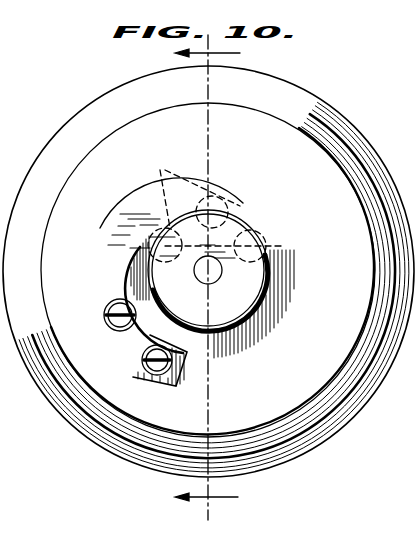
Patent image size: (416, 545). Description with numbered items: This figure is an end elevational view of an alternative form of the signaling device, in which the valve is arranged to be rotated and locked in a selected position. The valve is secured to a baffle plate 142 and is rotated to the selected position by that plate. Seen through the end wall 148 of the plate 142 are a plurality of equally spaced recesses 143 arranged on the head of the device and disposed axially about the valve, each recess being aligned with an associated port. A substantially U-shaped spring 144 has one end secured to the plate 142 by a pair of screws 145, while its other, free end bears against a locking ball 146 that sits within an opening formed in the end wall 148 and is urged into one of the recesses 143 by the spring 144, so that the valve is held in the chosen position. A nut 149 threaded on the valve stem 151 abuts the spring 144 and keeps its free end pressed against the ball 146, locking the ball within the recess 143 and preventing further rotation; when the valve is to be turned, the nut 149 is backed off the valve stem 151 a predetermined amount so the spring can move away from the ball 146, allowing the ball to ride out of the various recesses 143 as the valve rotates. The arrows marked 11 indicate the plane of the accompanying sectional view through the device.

The section line 11- 11 is at (219, 275).
The baffle plate 142 is at (305, 406).
The recesses 143 is at (256, 363).
The U-shaped spring 144 is at (106, 228).
The screws 145 is at (150, 372).
The locking ball 146 is at (230, 194).
The end wall 148 is at (143, 128).
The nut 149 is at (245, 262).
The valve stem 151 is at (224, 272).